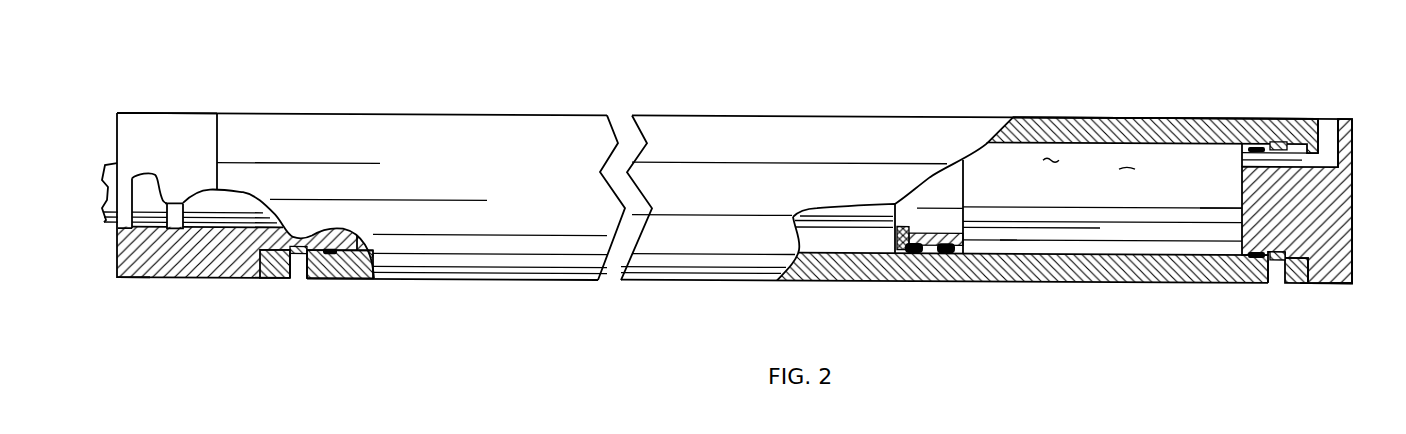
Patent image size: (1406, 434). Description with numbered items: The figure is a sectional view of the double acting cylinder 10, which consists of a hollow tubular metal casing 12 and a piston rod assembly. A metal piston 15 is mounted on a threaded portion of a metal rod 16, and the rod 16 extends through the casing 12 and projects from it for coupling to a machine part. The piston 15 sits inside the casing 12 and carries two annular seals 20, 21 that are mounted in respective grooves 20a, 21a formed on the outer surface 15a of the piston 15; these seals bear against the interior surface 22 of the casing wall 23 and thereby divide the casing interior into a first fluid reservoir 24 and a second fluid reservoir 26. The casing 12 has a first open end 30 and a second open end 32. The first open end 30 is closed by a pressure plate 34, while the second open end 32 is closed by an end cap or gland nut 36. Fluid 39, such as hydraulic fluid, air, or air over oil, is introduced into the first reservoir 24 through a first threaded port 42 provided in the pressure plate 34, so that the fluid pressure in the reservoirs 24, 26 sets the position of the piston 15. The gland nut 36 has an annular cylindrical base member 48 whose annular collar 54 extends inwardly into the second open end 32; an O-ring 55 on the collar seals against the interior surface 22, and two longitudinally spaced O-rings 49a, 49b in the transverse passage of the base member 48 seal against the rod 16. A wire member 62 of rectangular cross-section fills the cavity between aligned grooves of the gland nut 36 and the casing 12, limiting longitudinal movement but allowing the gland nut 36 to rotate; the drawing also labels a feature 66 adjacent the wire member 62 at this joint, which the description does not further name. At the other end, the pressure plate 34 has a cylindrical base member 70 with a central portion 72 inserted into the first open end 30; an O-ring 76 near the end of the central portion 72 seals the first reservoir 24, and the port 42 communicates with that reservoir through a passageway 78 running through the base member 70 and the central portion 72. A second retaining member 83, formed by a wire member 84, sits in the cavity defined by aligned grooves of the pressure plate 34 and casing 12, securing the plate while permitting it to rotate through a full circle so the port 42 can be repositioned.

The double acting cylinder 10 is at (1105, 68).
The casing 12 is at (320, 278).
The piston 15 is at (955, 188).
The outer surface of piston 15a is at (970, 248).
The rod 16 is at (107, 162).
The annular seal 20 is at (913, 252).
The groove 20a is at (885, 211).
The annular seal 21 is at (947, 253).
The groove 21a is at (937, 242).
The interior surface 22 is at (1018, 240).
The casing wall 23 is at (1185, 109).
The first fluid reservoir 24 is at (1087, 224).
The second fluid reservoir 26 is at (852, 239).
The first open end 30 is at (1343, 278).
The second open end 32 is at (215, 129).
The pressure plate 34 is at (1302, 290).
The gland nut 36 is at (162, 127).
The fluid 39 is at (1127, 162).
The first threaded port 42 is at (1328, 131).
The cylindrical base member 48 is at (218, 257).
The annular seal 49a is at (130, 276).
The annular seal 49b is at (187, 276).
The annular cylindrical collar 54 is at (267, 232).
The annular seal 55 is at (340, 268).
The wire member 62 is at (270, 267).
The gap 66 is at (297, 260).
The cylindrical base member 70 is at (1337, 173).
The central portion 72 is at (1247, 207).
The annular seal 76 is at (1256, 142).
The passageway 78 is at (1240, 171).
The second retaining member 83 is at (1278, 277).
The wire member 84 is at (1242, 281).